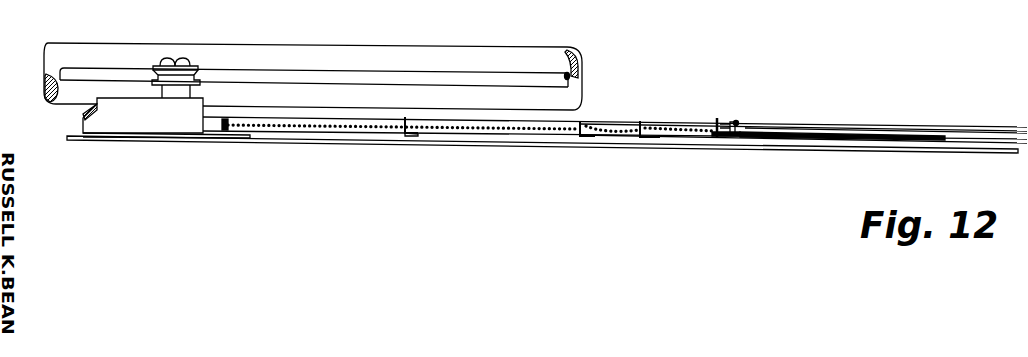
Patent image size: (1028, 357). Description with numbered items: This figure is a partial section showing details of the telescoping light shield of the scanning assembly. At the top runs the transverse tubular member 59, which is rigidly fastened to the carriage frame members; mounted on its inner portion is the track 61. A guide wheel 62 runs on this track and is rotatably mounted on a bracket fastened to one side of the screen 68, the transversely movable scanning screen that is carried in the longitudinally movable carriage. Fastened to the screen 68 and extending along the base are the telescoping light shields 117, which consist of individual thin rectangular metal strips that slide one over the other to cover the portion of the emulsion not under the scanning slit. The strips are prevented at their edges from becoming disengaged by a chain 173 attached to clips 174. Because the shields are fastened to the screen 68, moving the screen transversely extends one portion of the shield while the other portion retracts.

The transverse tubular member 59 is at (328, 53).
The track 61 is at (228, 77).
The guide wheel 62 is at (190, 72).
The screen 68 is at (95, 125).
The chain 173 is at (697, 135).
The clips 174 is at (408, 134).
The telescoping light shields 117 is at (795, 130).